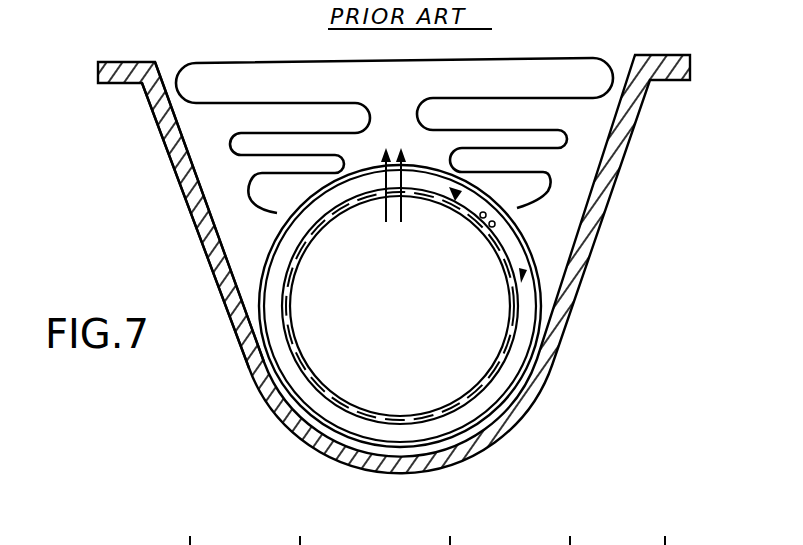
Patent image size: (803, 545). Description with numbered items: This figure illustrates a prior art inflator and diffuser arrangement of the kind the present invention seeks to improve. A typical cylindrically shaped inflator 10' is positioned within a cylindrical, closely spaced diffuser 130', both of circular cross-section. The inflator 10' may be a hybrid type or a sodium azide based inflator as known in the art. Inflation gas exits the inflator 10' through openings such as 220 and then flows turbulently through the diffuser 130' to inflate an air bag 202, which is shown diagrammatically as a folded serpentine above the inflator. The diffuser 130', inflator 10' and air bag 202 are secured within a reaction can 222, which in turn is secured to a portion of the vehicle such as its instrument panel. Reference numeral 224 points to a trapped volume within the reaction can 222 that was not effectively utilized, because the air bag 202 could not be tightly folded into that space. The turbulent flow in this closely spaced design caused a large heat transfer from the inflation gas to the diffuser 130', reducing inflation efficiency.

The air bag 202 is at (294, 63).
The reaction can 222 is at (168, 147).
The diffuser 130' is at (394, 264).
The inflator 10' is at (400, 306).
The openings 220 is at (307, 245).
The trapped volume indicator 224 is at (548, 218).